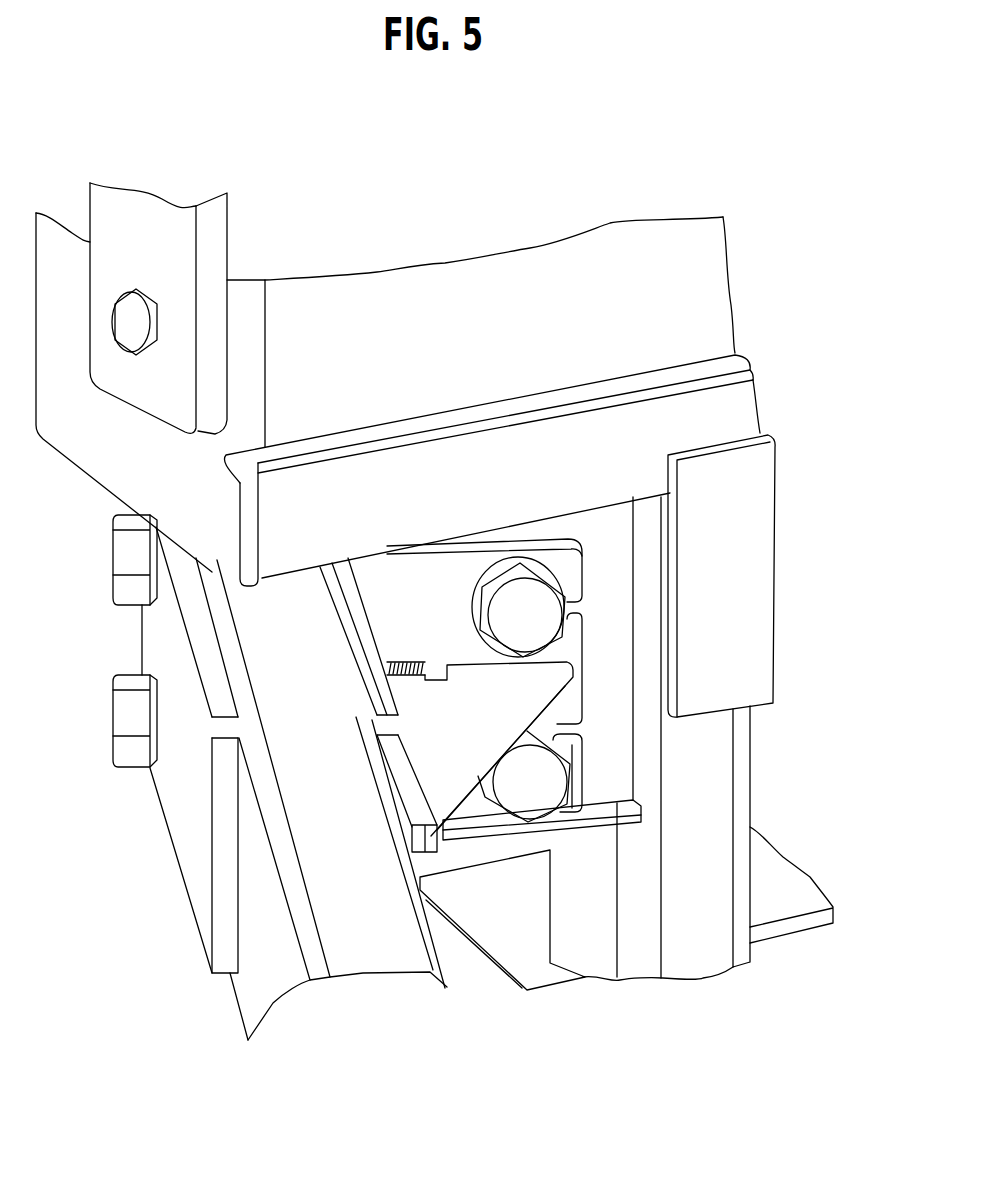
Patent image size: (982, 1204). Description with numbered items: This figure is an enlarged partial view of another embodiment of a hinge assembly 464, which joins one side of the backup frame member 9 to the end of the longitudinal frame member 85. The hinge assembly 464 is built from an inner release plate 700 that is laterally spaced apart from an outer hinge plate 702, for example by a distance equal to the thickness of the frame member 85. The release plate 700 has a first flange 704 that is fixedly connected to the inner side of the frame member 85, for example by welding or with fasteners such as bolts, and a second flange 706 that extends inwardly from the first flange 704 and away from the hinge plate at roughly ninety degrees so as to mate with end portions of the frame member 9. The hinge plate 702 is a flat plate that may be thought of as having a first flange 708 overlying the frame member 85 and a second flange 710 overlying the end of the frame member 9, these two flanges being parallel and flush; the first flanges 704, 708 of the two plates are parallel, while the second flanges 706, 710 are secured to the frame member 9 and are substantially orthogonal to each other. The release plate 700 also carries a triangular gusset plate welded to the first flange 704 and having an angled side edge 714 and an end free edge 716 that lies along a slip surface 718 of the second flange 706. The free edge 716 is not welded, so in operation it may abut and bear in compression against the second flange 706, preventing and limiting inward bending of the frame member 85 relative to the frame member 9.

The backup frame member 9 is at (735, 535).
The frame member 85 is at (353, 958).
The hinge assembly 464 is at (477, 972).
The release plate 700 is at (462, 812).
The hinge plate 702 is at (157, 775).
The first flange 704 is at (372, 700).
The second flange 706 is at (572, 772).
The first flange 708 is at (189, 822).
The second flange 710 is at (142, 620).
The angled side edge 714 is at (590, 800).
The free edge 716 is at (537, 660).
The slip surface 718 is at (440, 578).